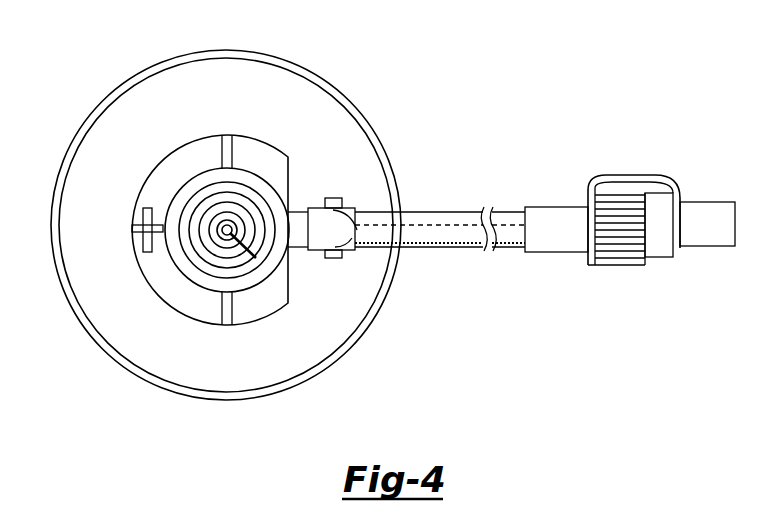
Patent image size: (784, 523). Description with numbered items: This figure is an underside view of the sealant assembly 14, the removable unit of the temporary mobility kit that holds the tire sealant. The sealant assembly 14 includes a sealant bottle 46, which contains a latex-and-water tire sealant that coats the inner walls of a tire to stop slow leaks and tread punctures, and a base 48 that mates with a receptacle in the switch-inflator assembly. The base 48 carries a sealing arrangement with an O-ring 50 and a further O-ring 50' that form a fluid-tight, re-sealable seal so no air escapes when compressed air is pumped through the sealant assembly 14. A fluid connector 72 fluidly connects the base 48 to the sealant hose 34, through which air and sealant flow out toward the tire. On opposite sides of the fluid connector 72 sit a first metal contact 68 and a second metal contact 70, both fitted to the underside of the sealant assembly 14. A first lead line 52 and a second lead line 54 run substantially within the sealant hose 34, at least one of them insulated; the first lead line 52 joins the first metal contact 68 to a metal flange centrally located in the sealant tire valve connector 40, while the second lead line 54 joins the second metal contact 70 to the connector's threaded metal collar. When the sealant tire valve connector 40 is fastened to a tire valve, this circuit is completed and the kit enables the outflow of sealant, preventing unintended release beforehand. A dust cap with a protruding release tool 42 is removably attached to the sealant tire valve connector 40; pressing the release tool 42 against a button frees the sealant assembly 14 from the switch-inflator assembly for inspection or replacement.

The sealant assembly 14 is at (183, 85).
The sealant bottle 46 is at (107, 167).
The base 48 is at (168, 262).
The O-ring 50 is at (227, 195).
The center antenna element 50' is at (247, 284).
The first metal contact 68 is at (335, 198).
The second metal contact 70 is at (333, 258).
The fluid connector 72 is at (360, 232).
The first lead line 52 is at (427, 212).
The sealant hose 34 is at (457, 223).
The second lead line 54 is at (440, 248).
The sealant tire valve connector 40 is at (621, 238).
The release tool 42 is at (722, 246).